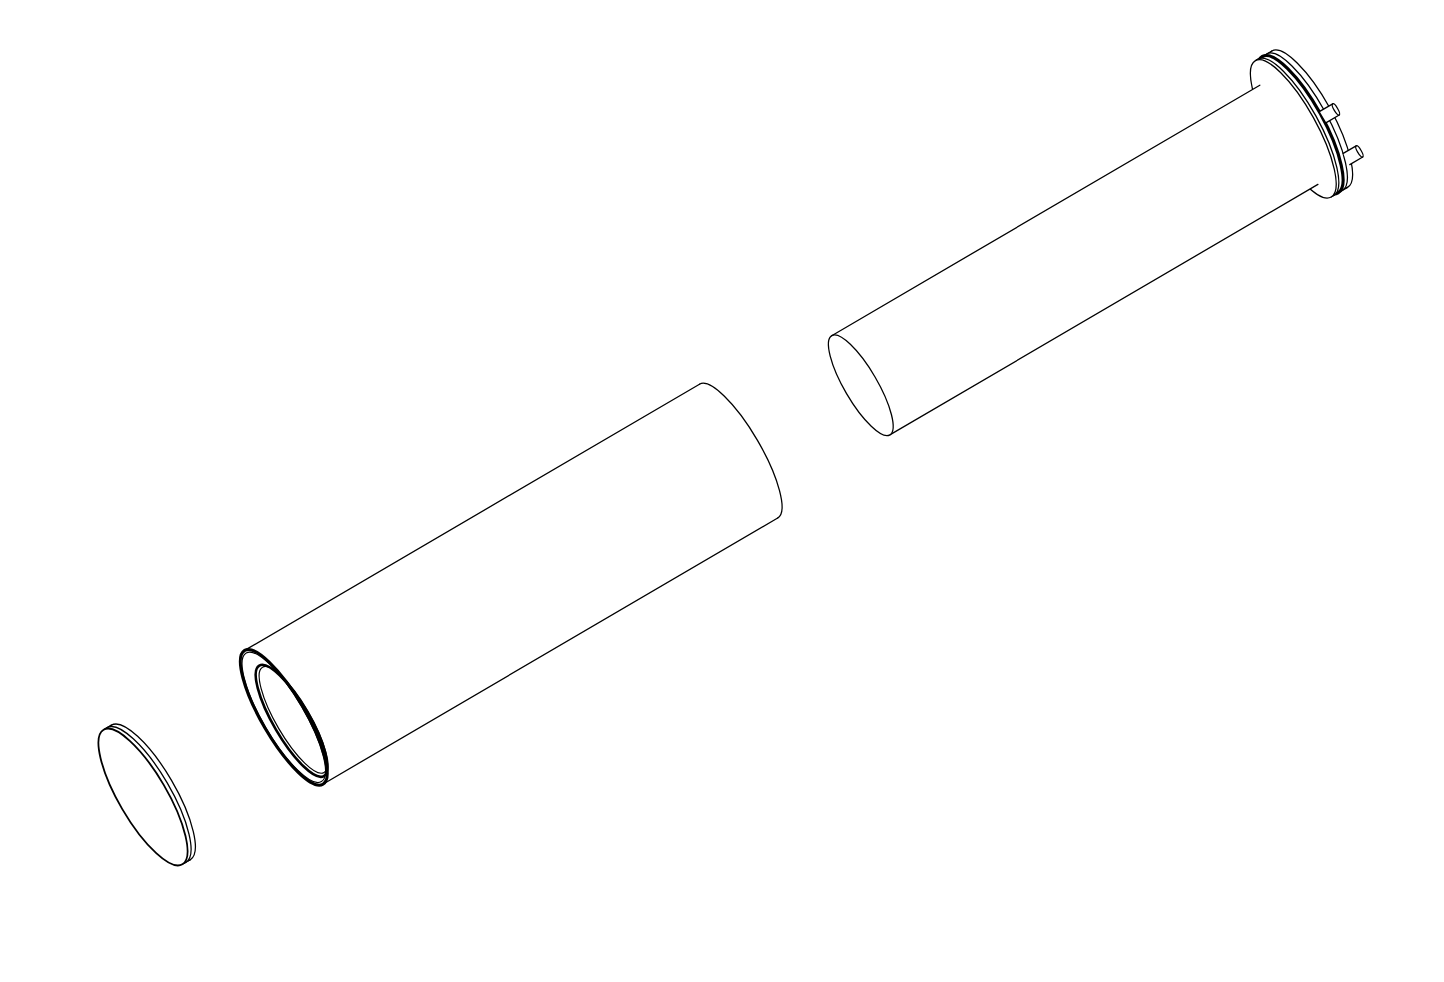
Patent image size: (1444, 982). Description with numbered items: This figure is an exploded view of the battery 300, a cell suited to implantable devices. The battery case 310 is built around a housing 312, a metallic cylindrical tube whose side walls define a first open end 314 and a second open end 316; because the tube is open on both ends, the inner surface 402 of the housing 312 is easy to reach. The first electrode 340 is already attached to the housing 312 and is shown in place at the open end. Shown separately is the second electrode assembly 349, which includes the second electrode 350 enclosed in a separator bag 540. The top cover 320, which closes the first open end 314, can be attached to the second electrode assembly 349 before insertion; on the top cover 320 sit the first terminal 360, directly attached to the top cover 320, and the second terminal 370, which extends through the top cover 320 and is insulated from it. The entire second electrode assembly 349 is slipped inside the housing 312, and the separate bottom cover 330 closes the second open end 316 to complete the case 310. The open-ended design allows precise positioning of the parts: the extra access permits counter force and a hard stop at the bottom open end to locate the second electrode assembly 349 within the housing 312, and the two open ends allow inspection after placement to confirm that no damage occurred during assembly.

The battery 300 is at (549, 250).
The battery case 310 is at (549, 654).
The housing 312 is at (470, 518).
The first open end 314 is at (777, 433).
The second open end 316 is at (256, 754).
The top cover 320 is at (1343, 191).
The bottom cover 330 is at (146, 799).
The first electrode 340 is at (303, 745).
The second electrode assembly 349 is at (938, 249).
The second electrode 350 is at (1108, 309).
The first terminal 360 is at (1366, 149).
The second terminal 370 is at (1340, 114).
The inner surface 402 is at (280, 690).
The separator bag 540 is at (1050, 205).